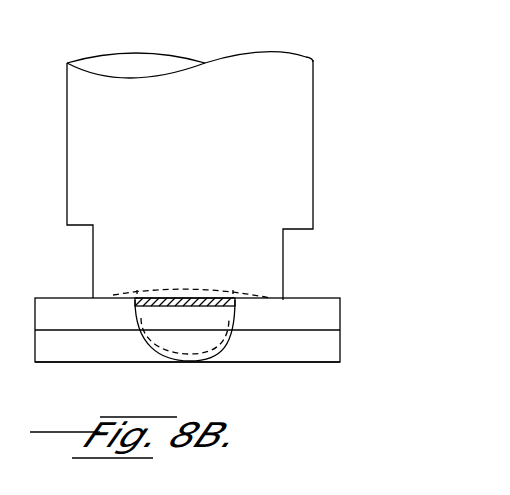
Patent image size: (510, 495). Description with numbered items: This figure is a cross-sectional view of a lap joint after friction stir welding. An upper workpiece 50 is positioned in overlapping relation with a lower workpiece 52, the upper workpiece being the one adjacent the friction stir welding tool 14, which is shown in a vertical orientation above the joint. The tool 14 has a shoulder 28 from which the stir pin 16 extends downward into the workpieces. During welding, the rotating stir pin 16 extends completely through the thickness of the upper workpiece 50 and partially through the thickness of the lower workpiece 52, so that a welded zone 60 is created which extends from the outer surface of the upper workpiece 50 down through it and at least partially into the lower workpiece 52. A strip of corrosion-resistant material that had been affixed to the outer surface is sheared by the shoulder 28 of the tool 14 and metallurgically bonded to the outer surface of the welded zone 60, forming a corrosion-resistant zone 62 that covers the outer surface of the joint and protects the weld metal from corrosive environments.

The friction stir welding tool 14 is at (293, 147).
The stir pin 16 is at (158, 339).
The shoulder 28 is at (108, 300).
The upper workpiece 50 is at (313, 307).
The lower workpiece 52 is at (320, 357).
The welded zone 60 is at (227, 337).
The corrosion-resistant zone 62 is at (197, 298).